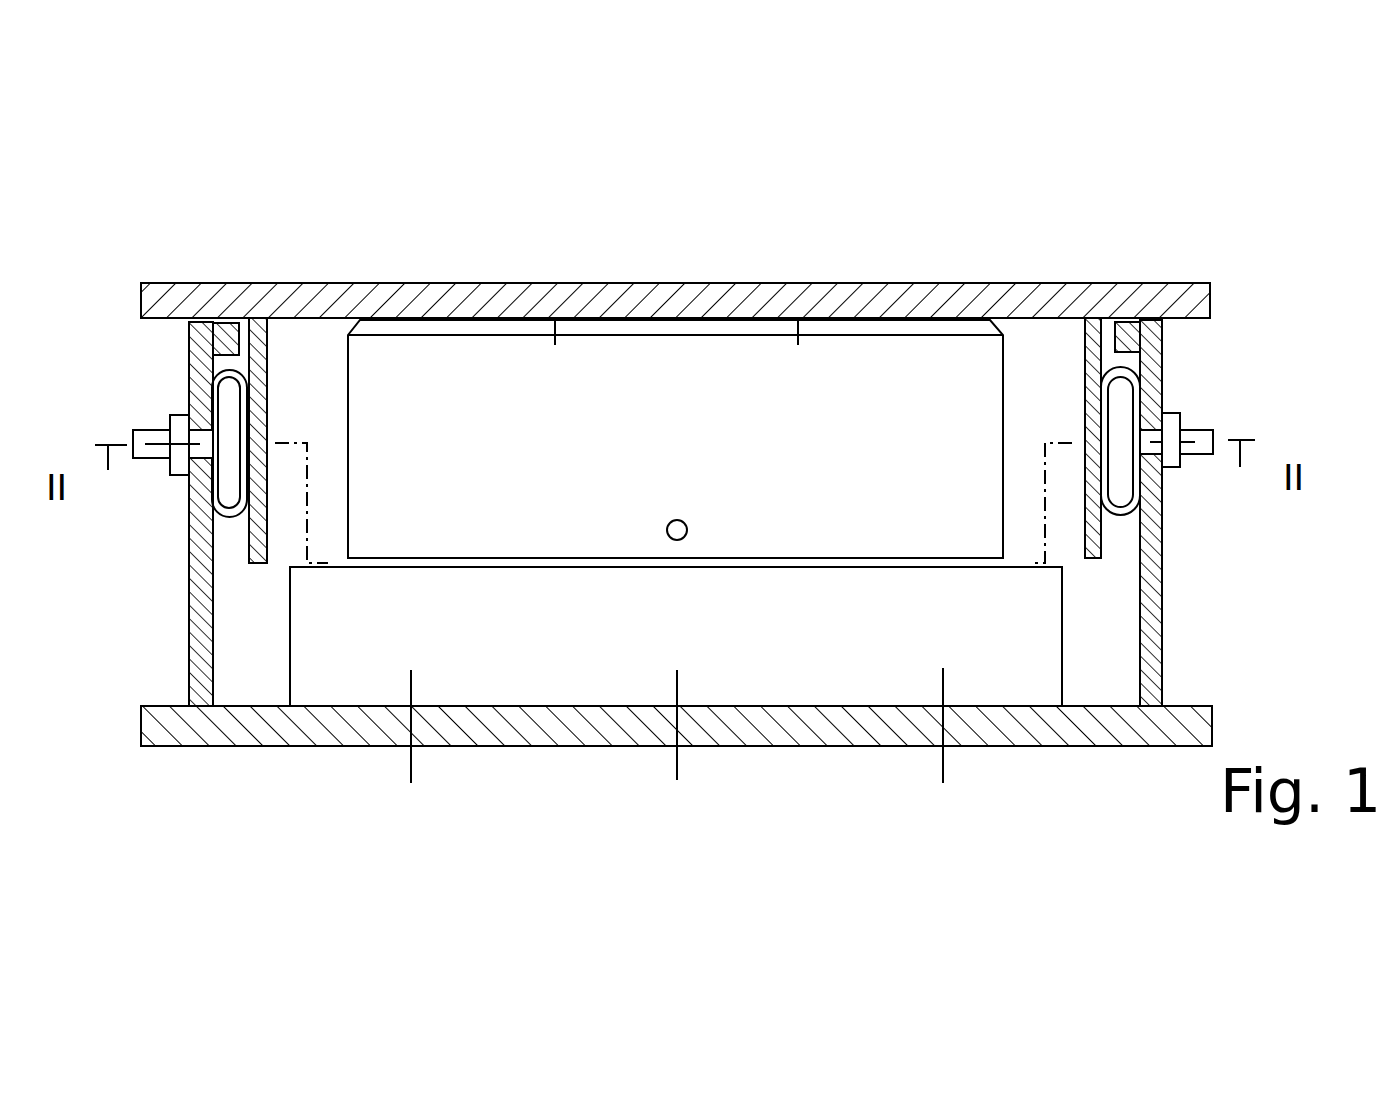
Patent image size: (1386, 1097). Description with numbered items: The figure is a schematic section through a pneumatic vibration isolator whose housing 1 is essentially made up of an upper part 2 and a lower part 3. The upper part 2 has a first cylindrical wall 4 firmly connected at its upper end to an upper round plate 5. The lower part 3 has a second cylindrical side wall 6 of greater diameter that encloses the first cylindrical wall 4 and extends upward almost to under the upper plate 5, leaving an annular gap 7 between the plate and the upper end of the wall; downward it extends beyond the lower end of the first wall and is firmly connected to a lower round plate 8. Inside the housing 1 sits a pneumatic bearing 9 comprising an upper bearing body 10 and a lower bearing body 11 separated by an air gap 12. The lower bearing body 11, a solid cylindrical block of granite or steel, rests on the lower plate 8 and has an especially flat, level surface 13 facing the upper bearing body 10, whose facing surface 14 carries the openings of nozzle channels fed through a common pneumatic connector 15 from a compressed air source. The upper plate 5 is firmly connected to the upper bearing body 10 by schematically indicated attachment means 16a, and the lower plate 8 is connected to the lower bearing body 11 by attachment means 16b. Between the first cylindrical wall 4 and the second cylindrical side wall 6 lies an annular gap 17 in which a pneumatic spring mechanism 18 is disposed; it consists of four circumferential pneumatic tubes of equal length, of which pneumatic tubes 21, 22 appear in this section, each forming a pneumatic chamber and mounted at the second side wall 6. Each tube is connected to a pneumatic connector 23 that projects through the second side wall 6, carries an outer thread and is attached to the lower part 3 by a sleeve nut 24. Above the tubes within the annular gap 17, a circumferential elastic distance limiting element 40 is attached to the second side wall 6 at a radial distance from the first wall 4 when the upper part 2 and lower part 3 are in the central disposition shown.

The housing 1 is at (1219, 513).
The upper part 2 is at (675, 249).
The lower part 3 is at (676, 766).
The first cylindrical wall 4 is at (213, 362).
The upper round plate 5 is at (900, 283).
The second cylindrical side wall 6 is at (189, 650).
The annular gap 7 is at (1160, 320).
The lower round plate 8 is at (1080, 746).
The pneumatic bearing 9 is at (675, 372).
The upper bearing body 10 is at (660, 348).
The lower bearing body 11 is at (903, 683).
The air gap 12 is at (850, 567).
The surface 13 is at (785, 568).
The surface 14 is at (766, 558).
The common pneumatic connector 15 is at (683, 520).
The attachment means 16a is at (555, 340).
The attachment means 16b is at (411, 757).
The annular gap 17 is at (222, 530).
The pneumatic spring mechanism 18 is at (1163, 555).
The pneumatic tube 21 is at (1143, 483).
The pneumatic tube 22 is at (212, 470).
The pneumatic connector 23 is at (1213, 432).
The sleeve nut 24 is at (1165, 415).
The elastic distance limiting element 40 is at (1162, 355).